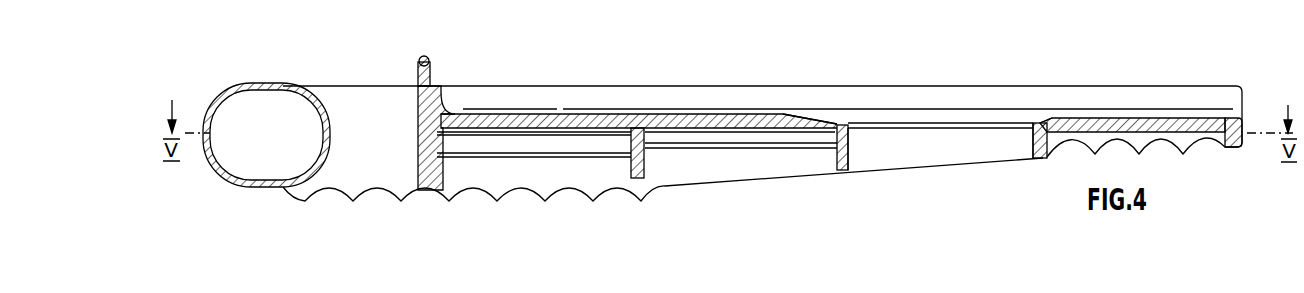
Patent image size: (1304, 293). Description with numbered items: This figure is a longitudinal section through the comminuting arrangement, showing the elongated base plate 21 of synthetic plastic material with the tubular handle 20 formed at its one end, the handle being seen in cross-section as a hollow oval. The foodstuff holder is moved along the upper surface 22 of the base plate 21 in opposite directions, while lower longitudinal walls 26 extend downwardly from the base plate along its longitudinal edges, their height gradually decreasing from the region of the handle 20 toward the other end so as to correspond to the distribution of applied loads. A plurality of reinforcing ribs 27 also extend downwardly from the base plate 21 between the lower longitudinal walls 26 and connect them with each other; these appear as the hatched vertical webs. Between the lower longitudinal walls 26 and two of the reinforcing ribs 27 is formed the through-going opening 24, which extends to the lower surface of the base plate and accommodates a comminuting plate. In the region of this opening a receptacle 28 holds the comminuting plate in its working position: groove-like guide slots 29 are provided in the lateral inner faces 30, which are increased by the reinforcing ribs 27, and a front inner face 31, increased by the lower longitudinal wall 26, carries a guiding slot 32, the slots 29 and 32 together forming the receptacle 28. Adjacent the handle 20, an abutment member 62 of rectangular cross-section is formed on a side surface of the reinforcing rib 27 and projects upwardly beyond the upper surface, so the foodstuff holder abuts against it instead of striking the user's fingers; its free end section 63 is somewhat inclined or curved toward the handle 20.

The handle 20 is at (283, 86).
The base plate 21 is at (687, 117).
The upper surface 22 is at (606, 108).
The through-going opening 24 is at (913, 155).
The lower longitudinal walls 26 is at (740, 165).
The reinforcing ribs 27 is at (418, 173).
The receptacle 28 is at (931, 115).
The guide slots 29 is at (838, 122).
The lateral inner faces 30 is at (850, 143).
The front inner face 31 is at (960, 158).
The guiding slot 32 is at (983, 123).
The abutment member 62 is at (430, 70).
The free end section 63 is at (413, 60).